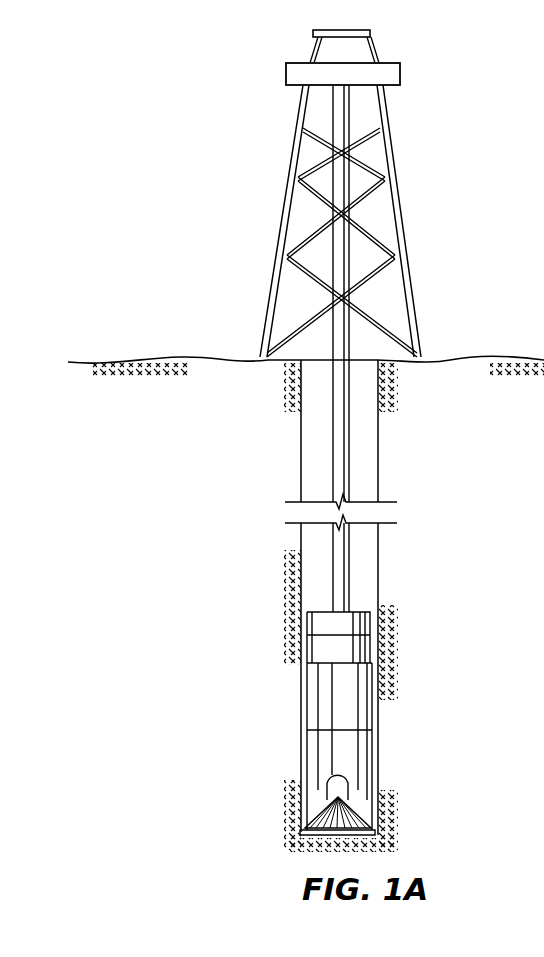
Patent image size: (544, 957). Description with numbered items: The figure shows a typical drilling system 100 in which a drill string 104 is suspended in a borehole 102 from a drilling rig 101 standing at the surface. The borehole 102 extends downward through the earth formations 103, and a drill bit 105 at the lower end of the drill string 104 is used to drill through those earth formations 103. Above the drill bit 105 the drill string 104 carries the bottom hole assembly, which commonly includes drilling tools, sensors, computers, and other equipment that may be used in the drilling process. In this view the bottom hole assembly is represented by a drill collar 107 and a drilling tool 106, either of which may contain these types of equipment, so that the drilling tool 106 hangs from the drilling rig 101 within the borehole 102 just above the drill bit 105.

The drilling system 100 is at (479, 175).
The drilling rig 101 is at (290, 203).
The borehole 102 is at (366, 383).
The earth formations 103 is at (463, 397).
The drill string 104 is at (350, 447).
The drill bit 105 is at (372, 768).
The drilling tool 106 is at (372, 696).
The drill collar 107 is at (372, 623).